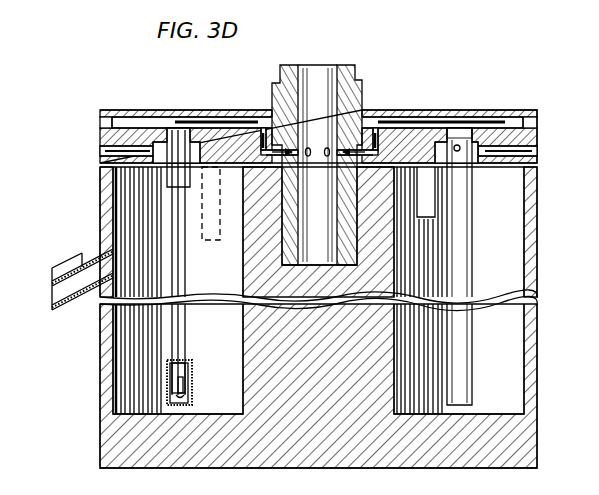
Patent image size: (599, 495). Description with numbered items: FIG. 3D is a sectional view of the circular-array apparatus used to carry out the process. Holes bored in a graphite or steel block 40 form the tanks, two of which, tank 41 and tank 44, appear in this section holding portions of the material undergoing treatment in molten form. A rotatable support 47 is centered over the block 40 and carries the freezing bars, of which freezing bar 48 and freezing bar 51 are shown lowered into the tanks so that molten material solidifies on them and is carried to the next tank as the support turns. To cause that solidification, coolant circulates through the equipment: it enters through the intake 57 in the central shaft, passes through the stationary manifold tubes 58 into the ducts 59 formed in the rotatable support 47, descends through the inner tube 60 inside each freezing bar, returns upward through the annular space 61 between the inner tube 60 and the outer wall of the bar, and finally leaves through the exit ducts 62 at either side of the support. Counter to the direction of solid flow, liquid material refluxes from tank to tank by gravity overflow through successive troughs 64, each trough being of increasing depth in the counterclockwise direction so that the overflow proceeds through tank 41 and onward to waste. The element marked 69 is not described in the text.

The block 40 is at (537, 222).
The tank 41 is at (135, 237).
The tank 44 is at (512, 270).
The rotatable support 47 is at (490, 109).
The freezing bar 48 is at (175, 217).
The freezing bar 51 is at (458, 256).
The intake 57 is at (317, 80).
The stationary manifold tube 58 is at (276, 150).
The duct 59 is at (212, 125).
The inner tube 60 is at (186, 391).
The annular space 61 is at (192, 370).
The exit duct 62 is at (90, 152).
The trough 64 is at (205, 196).
The tube 69 is at (58, 294).